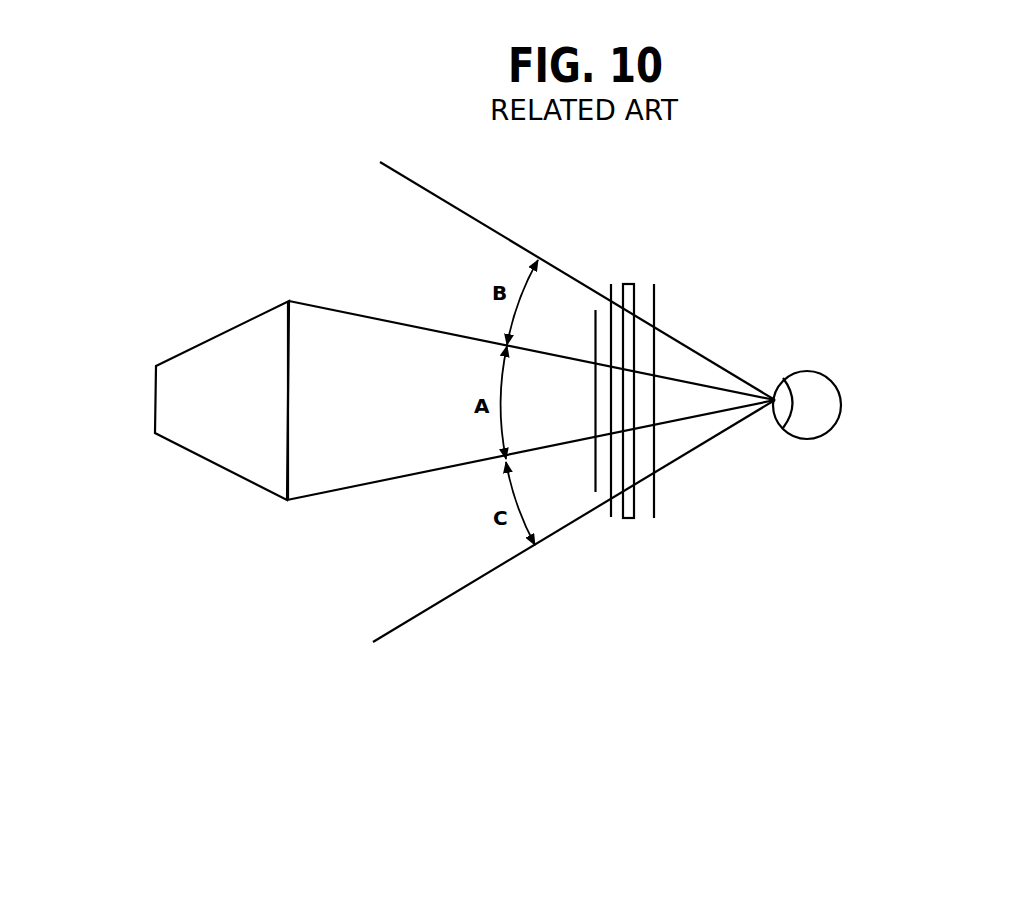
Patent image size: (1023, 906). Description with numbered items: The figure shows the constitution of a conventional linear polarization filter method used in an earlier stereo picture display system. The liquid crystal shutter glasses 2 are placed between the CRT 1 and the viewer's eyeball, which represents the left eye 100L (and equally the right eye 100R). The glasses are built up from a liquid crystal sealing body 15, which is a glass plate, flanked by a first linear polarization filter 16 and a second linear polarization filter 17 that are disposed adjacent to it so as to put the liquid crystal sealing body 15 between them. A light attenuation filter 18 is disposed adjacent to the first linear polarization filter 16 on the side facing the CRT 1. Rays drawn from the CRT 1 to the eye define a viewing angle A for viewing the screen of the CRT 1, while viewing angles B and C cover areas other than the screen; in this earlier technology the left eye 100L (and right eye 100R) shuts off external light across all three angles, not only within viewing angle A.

The CRT 1 is at (196, 358).
The liquid crystal shutter glasses 2 is at (770, 483).
The liquid crystal sealing body 15 is at (629, 529).
The first linear polarization filter 16 is at (607, 529).
The second linear polarization filter 17 is at (659, 511).
The light attenuation filter 18 is at (590, 502).
The left eye 100L is at (795, 387).
The right eye 100R is at (806, 388).